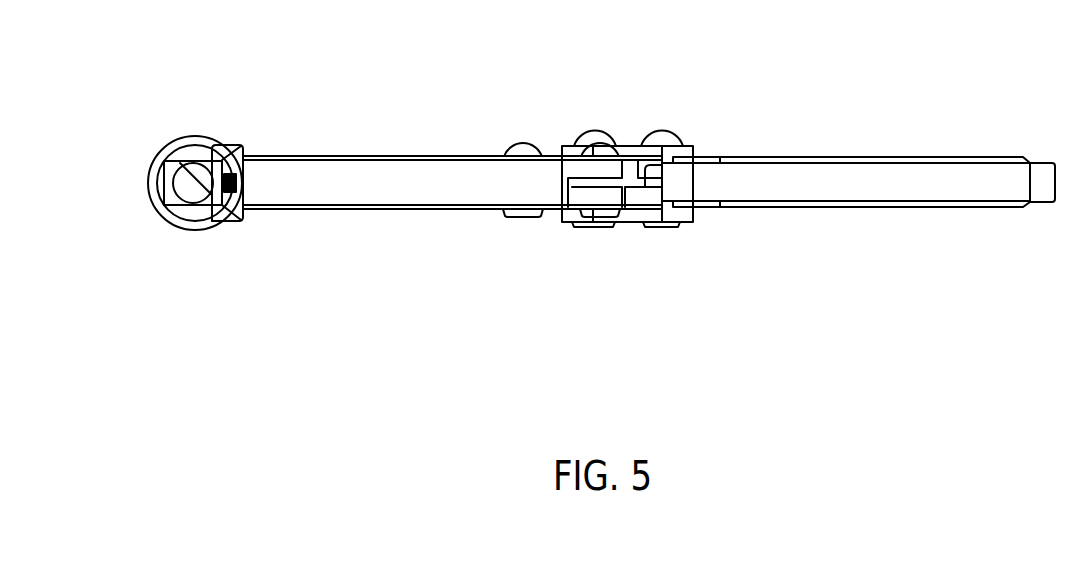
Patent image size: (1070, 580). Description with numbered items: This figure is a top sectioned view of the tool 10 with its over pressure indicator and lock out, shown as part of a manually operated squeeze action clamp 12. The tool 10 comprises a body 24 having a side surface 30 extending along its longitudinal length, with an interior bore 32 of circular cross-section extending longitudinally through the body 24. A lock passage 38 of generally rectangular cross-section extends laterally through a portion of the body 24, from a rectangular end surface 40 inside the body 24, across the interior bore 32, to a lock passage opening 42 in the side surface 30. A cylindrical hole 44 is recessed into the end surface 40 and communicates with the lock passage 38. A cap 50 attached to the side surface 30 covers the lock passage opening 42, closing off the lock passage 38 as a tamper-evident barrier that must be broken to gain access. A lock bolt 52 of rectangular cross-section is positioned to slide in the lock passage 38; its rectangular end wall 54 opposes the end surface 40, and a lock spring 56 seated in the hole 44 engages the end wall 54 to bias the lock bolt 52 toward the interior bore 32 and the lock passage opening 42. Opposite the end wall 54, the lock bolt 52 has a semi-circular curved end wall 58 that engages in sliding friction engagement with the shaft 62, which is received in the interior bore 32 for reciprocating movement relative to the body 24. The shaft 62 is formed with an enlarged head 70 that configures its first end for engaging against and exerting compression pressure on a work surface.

The tool 10 is at (255, 178).
The squeeze action clamp 12 is at (427, 147).
The body 24 is at (230, 145).
The side surface 30 is at (230, 220).
The interior bore 32 is at (165, 150).
The lock passage 38 is at (153, 182).
The end surface 40 is at (210, 205).
The lock passage opening 42 is at (156, 196).
The cylindrical hole 44 is at (253, 173).
The cap 50 is at (163, 178).
The lock bolt 52 is at (212, 150).
The end wall 54 is at (236, 172).
The lock spring 56 is at (228, 212).
The curved end wall 58 is at (188, 204).
The shaft 62 is at (167, 207).
The enlarged head 70 is at (183, 136).